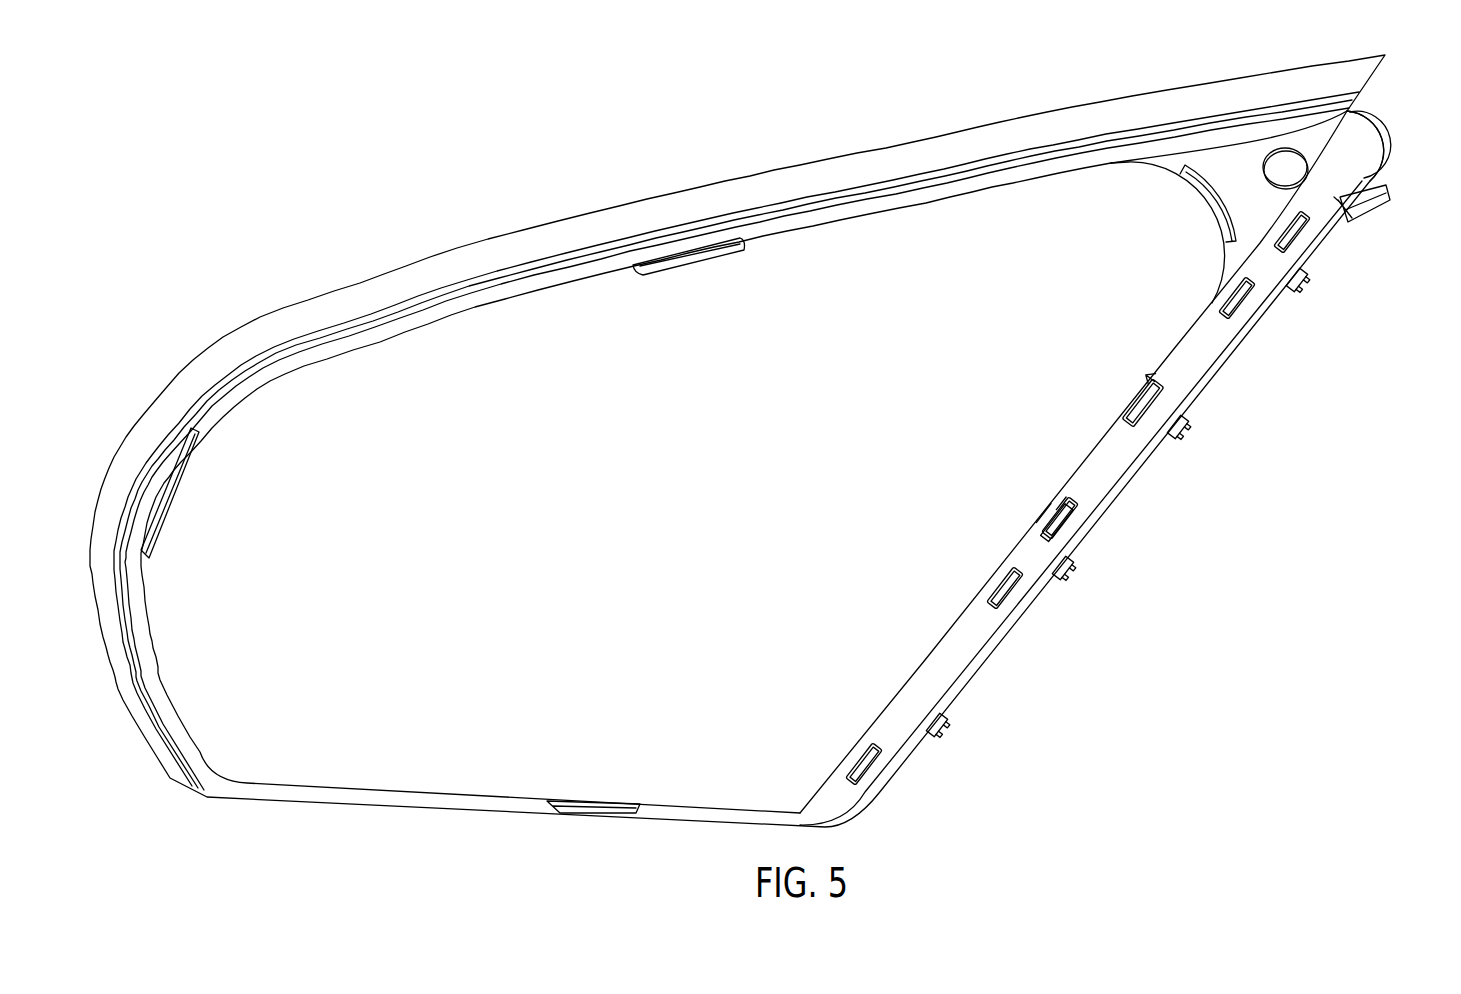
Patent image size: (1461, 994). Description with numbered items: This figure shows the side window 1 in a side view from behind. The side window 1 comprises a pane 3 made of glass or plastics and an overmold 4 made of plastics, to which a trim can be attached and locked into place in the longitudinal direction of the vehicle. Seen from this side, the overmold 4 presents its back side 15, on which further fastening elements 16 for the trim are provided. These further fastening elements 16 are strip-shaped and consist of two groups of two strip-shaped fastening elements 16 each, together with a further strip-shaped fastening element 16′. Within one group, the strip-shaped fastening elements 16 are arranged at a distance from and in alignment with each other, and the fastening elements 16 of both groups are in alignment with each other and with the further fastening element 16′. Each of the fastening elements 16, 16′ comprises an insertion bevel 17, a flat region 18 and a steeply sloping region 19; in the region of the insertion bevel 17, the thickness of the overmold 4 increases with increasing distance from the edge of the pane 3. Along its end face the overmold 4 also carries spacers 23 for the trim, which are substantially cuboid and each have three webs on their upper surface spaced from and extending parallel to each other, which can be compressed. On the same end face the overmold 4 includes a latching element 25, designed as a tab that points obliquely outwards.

The side window 1 is at (278, 234).
The pane 3 is at (450, 338).
The overmold 4 is at (1372, 138).
The back side 15 is at (1358, 157).
The further fastening elements 16 is at (1290, 240).
The further strip-shaped fastening element 16′ is at (876, 765).
The insertion bevel 17 is at (1053, 526).
The flat region 18 is at (1047, 520).
The steeply sloping region 19 is at (1063, 505).
The spacers 23 is at (1302, 290).
The latching element 25 is at (1378, 207).